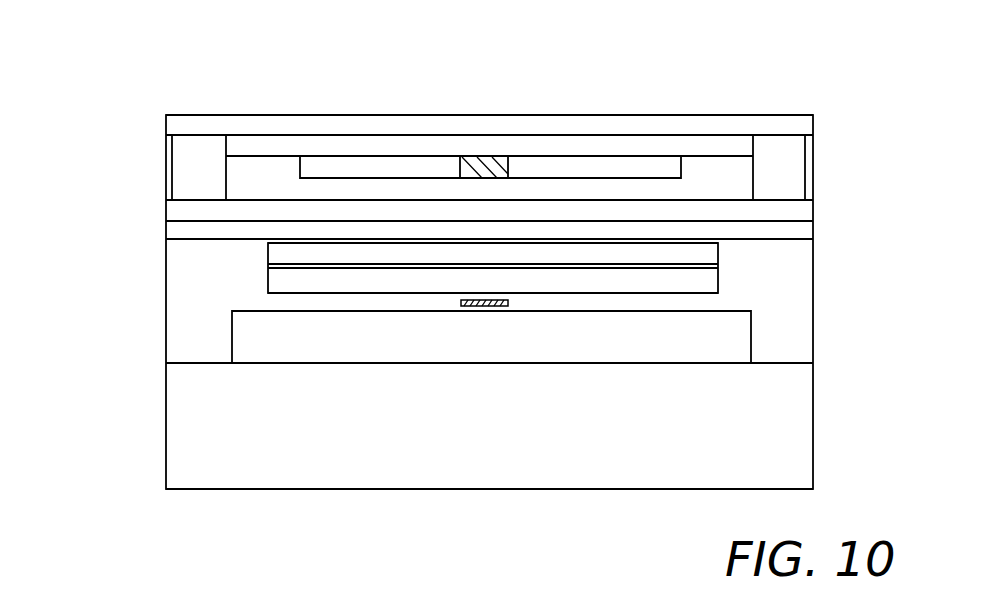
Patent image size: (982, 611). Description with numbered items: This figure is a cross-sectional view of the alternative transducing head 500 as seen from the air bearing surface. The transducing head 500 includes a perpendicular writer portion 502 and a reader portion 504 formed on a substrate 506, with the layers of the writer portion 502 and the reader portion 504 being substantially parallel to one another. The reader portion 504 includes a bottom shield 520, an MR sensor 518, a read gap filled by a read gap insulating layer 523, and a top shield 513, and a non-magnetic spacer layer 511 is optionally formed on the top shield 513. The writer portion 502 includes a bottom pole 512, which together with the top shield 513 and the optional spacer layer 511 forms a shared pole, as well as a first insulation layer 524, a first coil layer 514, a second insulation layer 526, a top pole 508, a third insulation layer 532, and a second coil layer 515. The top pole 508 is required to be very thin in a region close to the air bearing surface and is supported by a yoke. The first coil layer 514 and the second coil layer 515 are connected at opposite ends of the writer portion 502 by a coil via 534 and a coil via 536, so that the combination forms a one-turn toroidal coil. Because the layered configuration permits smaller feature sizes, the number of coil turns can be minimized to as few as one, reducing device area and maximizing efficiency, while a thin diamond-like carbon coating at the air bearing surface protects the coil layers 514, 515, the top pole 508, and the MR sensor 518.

The transducing head 500 is at (735, 80).
The perpendicular writer portion 502 is at (820, 115).
The reader portion 504 is at (862, 240).
The substrate 506 is at (814, 412).
The top pole 508 is at (458, 167).
The spacer layer 511 is at (268, 268).
The bottom pole 512 is at (268, 253).
The top shield 513 is at (268, 288).
The first coil layer 514 is at (165, 207).
The second coil layer 515 is at (165, 122).
The MR sensor 518 is at (492, 307).
The bottom shield 520 is at (742, 330).
The read gap insulating layer 523 is at (531, 268).
The first insulation layer 524 is at (165, 232).
The second insulation layer 526 is at (522, 172).
The third insulation layer 532 is at (652, 168).
The coil via 534 is at (199, 166).
The coil via 536 is at (780, 166).